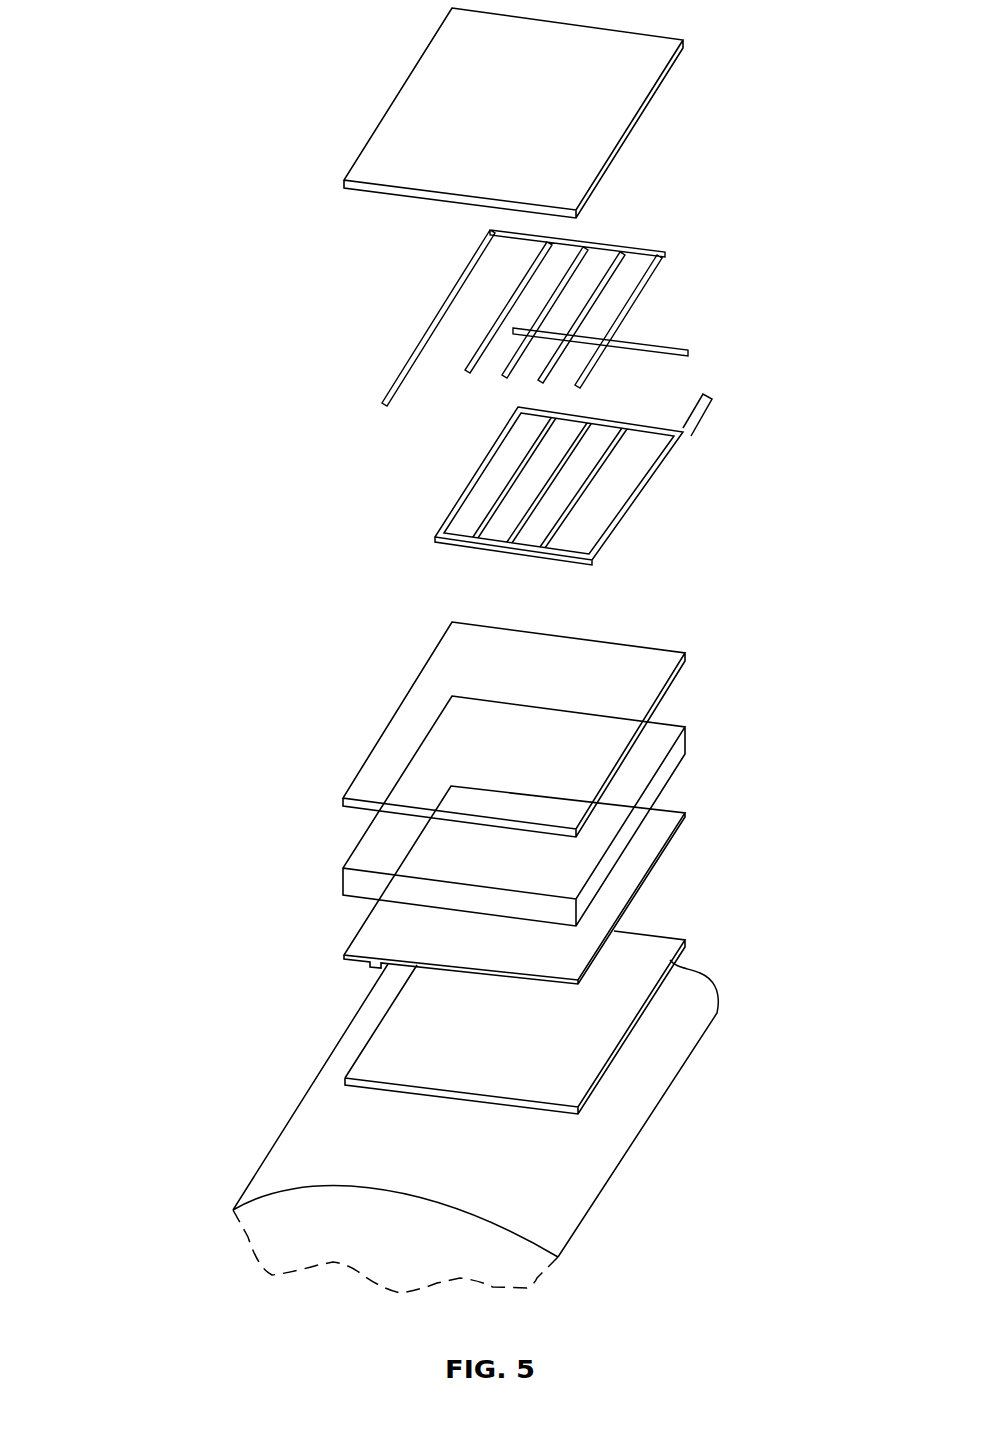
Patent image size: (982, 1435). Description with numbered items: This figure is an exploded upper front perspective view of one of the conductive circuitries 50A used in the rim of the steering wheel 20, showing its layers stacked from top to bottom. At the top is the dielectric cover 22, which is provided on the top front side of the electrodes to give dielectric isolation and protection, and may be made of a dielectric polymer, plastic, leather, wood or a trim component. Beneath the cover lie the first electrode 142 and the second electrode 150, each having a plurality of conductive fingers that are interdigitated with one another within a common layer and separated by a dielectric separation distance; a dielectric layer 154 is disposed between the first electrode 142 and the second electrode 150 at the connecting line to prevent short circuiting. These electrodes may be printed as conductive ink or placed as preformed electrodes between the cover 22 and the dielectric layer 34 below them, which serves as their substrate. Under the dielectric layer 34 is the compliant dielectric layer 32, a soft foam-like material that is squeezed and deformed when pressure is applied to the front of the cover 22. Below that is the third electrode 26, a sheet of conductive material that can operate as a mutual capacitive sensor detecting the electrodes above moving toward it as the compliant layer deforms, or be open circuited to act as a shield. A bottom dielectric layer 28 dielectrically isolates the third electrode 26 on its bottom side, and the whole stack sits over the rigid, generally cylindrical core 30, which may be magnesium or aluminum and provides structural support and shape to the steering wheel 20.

The steering wheel 20 is at (128, 357).
The dielectric cover 22 is at (370, 168).
The first electrode 142 is at (425, 335).
The dielectric layer 154 is at (658, 340).
The second electrode 150 is at (633, 498).
The conductive circuitry 50A is at (772, 247).
The dielectric layer 34 is at (372, 785).
The compliant dielectric layer 32 is at (370, 857).
The third electrode 26 is at (372, 943).
The dielectric layer 28 is at (370, 1070).
The core 30 is at (282, 1172).